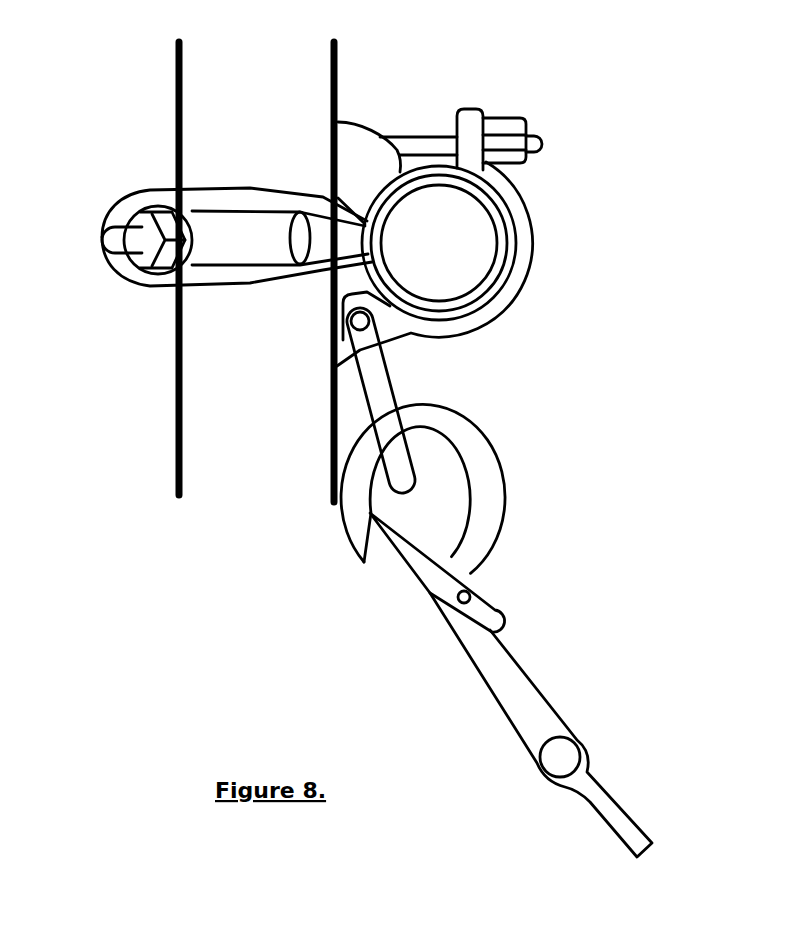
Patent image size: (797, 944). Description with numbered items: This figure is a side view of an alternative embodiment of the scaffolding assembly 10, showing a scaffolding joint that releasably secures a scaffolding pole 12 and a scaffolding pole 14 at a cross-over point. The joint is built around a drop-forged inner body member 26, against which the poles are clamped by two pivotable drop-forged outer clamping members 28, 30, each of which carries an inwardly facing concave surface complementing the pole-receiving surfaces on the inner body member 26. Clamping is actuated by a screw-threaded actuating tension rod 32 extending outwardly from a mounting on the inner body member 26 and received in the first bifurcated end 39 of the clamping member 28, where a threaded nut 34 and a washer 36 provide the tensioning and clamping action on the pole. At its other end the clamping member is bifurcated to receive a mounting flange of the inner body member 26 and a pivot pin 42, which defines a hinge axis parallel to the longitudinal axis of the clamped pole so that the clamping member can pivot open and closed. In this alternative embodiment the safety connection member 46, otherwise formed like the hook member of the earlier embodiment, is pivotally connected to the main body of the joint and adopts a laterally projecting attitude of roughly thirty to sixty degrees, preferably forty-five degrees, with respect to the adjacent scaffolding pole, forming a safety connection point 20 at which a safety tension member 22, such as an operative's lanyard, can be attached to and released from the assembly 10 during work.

The scaffolding assembly 10 is at (134, 333).
The scaffolding pole 12 is at (490, 279).
The scaffolding pole 14 is at (197, 112).
The safety connection point 20 is at (487, 533).
The safety tension member 22 is at (613, 817).
The inner body member 26 is at (366, 153).
The outer clamping member 28 is at (514, 208).
The outer clamping member 30 is at (200, 195).
The actuating tension rod 32 is at (437, 148).
The threaded nut 34 is at (503, 130).
The washer 36 is at (178, 215).
The first bifurcated end 39 is at (473, 135).
The pivot pin 42 is at (360, 322).
The safety connection member 46 is at (383, 393).